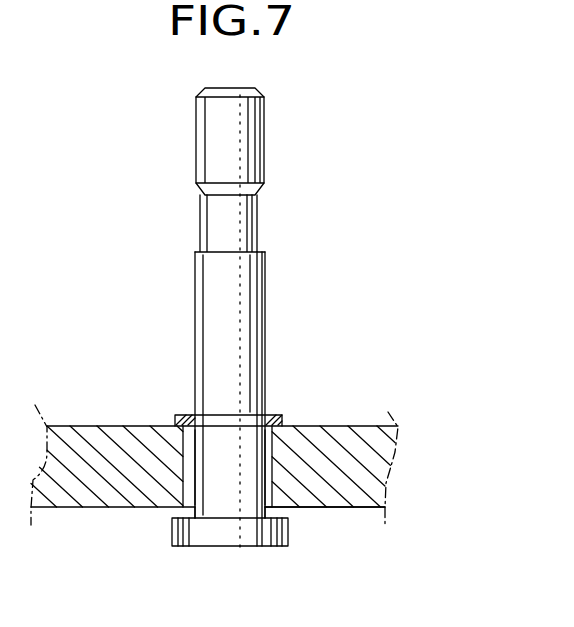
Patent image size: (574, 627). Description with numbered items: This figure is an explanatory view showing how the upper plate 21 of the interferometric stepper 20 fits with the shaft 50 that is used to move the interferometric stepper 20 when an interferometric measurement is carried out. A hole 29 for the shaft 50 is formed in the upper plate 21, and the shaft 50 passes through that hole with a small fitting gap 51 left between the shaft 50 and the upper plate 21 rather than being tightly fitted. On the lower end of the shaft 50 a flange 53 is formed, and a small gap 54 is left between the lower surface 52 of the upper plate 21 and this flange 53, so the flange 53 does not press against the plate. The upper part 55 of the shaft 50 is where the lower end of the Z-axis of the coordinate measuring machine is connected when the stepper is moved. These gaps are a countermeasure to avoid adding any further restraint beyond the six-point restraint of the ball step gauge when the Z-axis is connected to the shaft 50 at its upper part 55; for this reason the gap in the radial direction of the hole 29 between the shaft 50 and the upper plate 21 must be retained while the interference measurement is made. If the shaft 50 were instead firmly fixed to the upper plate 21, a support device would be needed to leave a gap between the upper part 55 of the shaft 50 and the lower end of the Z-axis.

The interferometric stepper 20 is at (214, 432).
The upper plate 21 is at (358, 442).
The hole 29 is at (262, 470).
The shaft 50 is at (216, 342).
The fitting gap 51 is at (272, 468).
The lower surface 52 is at (314, 508).
The flange 53 is at (250, 546).
The gap 54 is at (183, 513).
The upper part 55 is at (247, 154).